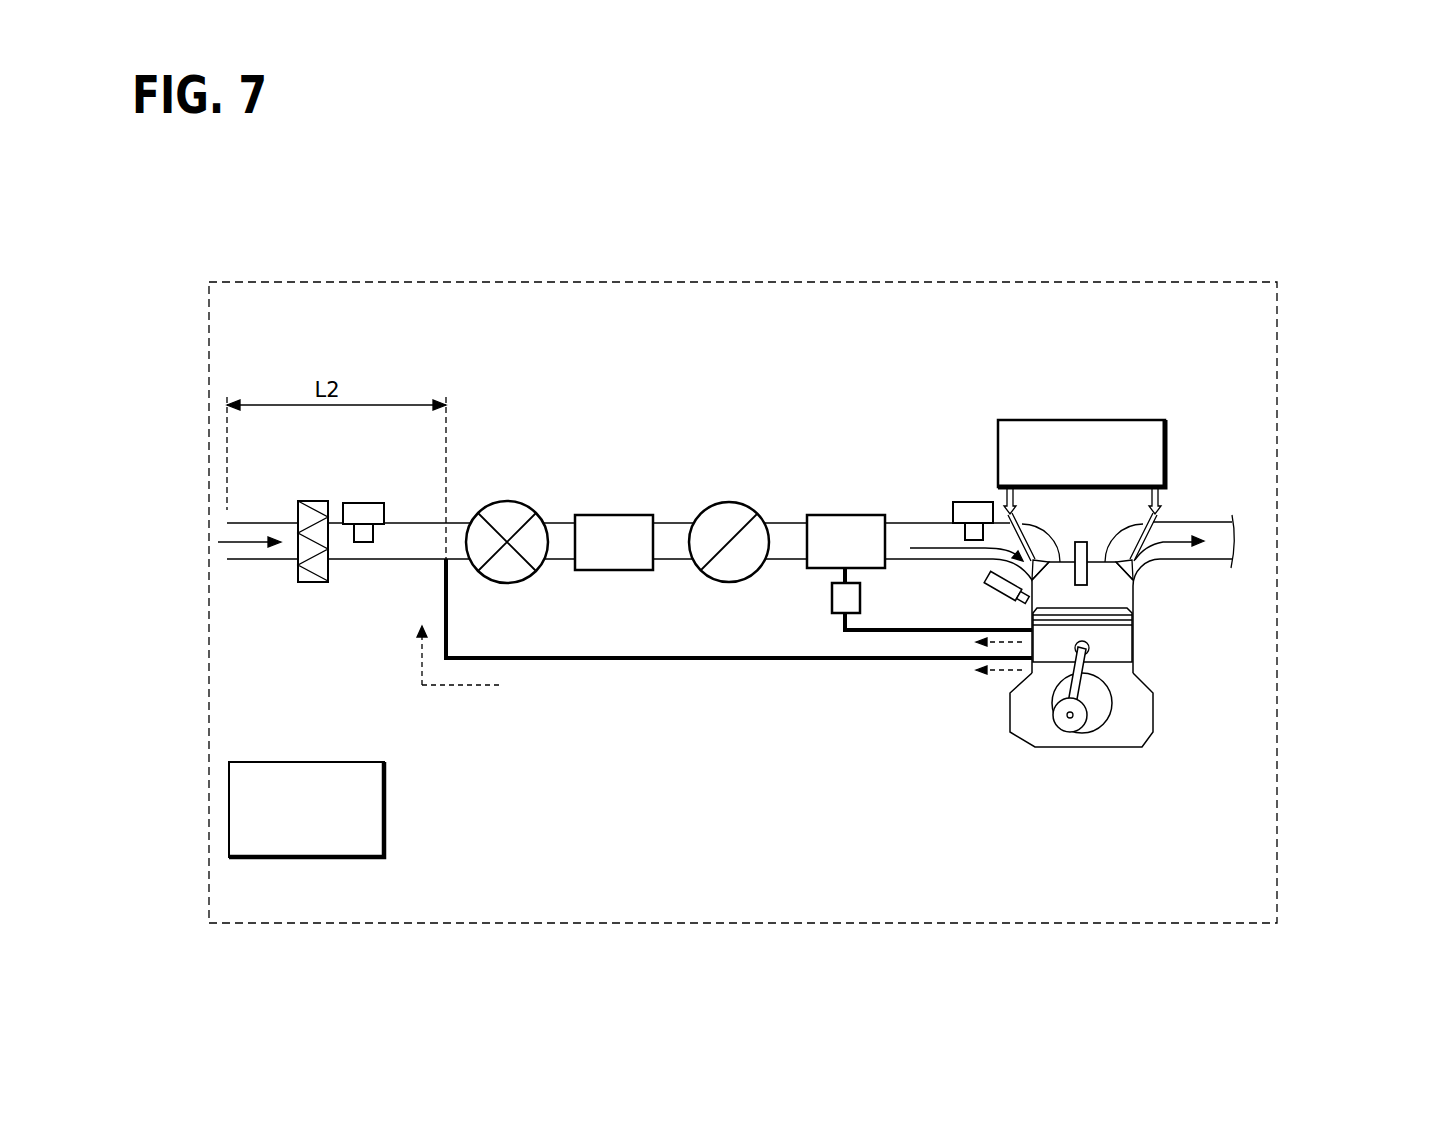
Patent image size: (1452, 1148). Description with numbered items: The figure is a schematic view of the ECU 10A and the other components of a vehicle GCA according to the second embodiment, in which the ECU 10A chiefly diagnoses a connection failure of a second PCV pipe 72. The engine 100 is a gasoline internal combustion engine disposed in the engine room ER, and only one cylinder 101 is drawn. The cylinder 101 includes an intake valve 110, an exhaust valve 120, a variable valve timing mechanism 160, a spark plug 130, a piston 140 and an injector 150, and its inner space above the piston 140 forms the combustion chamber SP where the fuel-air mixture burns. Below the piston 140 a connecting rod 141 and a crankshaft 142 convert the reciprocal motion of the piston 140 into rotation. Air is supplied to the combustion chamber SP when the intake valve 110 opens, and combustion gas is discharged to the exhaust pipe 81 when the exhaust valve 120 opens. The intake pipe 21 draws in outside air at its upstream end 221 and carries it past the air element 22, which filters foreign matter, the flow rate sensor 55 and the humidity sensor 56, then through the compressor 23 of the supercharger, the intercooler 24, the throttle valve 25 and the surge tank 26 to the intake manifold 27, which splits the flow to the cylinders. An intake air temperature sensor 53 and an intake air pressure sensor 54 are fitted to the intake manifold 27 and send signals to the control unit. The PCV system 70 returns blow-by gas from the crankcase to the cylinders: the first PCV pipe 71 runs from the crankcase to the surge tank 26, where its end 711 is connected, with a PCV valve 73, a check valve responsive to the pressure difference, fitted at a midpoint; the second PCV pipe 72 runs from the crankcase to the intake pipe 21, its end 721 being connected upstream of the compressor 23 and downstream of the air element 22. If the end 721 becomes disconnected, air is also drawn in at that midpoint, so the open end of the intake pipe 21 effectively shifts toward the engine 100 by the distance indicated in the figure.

The intake pipe 21 is at (250, 523).
The intake inlet 221 is at (227, 560).
The air element 22 is at (313, 582).
The flow rate sensor 55 is at (378, 483).
The humidity sensor 56 is at (364, 503).
The compressor 23 is at (508, 501).
The intercooler 24 is at (614, 515).
The throttle valve 25 is at (728, 502).
The surge tank 26 is at (850, 513).
The intake manifold 27 is at (940, 523).
The intake air temperature sensor 53 is at (970, 461).
The intake air pressure sensor 54 is at (976, 502).
The PCV system 70 is at (697, 669).
The first PCV pipe 71 is at (838, 620).
The end 711 is at (853, 572).
The second PCV pipe 72 is at (655, 662).
The end 721 is at (444, 562).
The PCV valve 73 is at (832, 598).
The engine 100 is at (1083, 562).
The cylinder 101 is at (1135, 630).
The intake valve 110 is at (1020, 519).
The exhaust valve 120 is at (1158, 522).
The spark plug 130 is at (1087, 548).
The piston 140 is at (1122, 697).
The connecting rod 141 is at (1078, 682).
The crankshaft 142 is at (1112, 707).
The injector 150 is at (1000, 593).
The variable valve timing mechanism 160 is at (1113, 420).
The exhaust pipe 81 is at (1185, 562).
The combustion chamber SP is at (1113, 597).
The ECU 10A is at (384, 804).
The engine room ER is at (1053, 282).
The vehicle GCA is at (1347, 228).